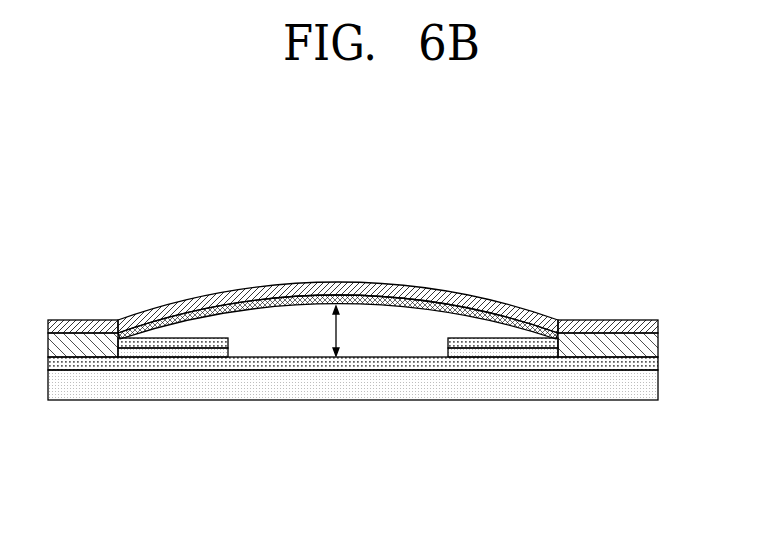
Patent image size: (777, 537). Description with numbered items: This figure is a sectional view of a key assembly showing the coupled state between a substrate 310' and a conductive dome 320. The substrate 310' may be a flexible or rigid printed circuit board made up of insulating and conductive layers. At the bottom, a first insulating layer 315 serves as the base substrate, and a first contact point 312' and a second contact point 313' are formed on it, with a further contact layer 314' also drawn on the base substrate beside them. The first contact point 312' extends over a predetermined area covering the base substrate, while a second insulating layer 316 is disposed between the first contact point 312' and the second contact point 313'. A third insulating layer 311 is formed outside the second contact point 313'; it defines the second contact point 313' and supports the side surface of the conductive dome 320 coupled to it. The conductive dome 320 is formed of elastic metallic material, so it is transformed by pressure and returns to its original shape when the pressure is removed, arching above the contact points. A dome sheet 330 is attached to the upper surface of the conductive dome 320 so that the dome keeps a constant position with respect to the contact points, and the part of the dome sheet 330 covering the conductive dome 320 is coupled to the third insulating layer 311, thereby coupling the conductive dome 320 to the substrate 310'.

The substrate 310' is at (378, 415).
The third insulating layer 311 is at (83, 350).
The first contact point 312' is at (353, 413).
The second contact point 313' is at (503, 403).
The first electrode 314' is at (173, 403).
The first insulating layer 315 is at (386, 396).
The second insulating layer 316 is at (154, 352).
The conductive dome 320 is at (500, 320).
The dome sheet 330 is at (452, 297).